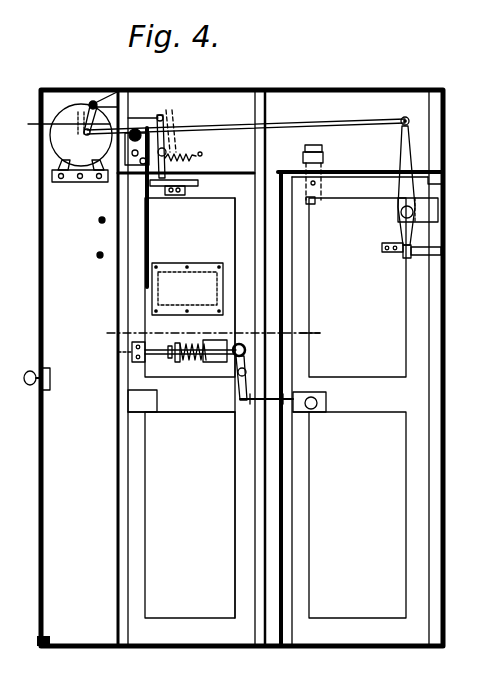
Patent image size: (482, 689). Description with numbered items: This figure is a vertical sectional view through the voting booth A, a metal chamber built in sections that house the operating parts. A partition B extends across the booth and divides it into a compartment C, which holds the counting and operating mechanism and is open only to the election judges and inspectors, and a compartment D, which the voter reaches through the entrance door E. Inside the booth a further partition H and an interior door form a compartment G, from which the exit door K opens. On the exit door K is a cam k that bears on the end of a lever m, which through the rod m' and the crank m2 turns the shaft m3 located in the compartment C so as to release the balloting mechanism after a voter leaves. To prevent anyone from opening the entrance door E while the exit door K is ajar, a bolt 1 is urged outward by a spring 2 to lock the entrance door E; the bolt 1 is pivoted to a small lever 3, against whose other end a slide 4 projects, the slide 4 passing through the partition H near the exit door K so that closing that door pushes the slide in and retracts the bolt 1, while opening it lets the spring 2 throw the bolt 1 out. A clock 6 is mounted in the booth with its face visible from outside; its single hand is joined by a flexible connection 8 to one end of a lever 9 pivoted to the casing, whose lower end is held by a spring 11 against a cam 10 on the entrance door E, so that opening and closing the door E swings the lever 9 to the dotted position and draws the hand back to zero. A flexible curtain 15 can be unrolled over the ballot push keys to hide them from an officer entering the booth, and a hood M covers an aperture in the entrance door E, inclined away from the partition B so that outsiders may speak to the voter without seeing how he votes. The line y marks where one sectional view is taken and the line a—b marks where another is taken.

The clock 6 is at (81, 143).
The flexible connection 8 is at (140, 123).
The lever 9 is at (164, 117).
The cam 10 is at (187, 191).
The spring 11 is at (186, 149).
The flexible curtain 15 is at (150, 237).
The bolt 1 is at (177, 345).
The spring 2 is at (186, 361).
The lever 3 is at (236, 383).
The slide 4 is at (240, 404).
The lever m is at (409, 181).
The rod m' is at (246, 120).
The crank m2 is at (56, 123).
The shaft m3 is at (92, 100).
The cam k is at (406, 254).
The section line y— y is at (118, 176).
The hood M is at (187, 289).
The section line a—b a is at (204, 333).
The section line a— b is at (317, 335).
The booth A is at (181, 504).
The partition B is at (116, 548).
The compartment C is at (62, 368).
The compartment D is at (190, 337).
The entrance door E is at (175, 632).
The compartment G is at (349, 408).
The partition H is at (283, 579).
The exit door K is at (394, 477).